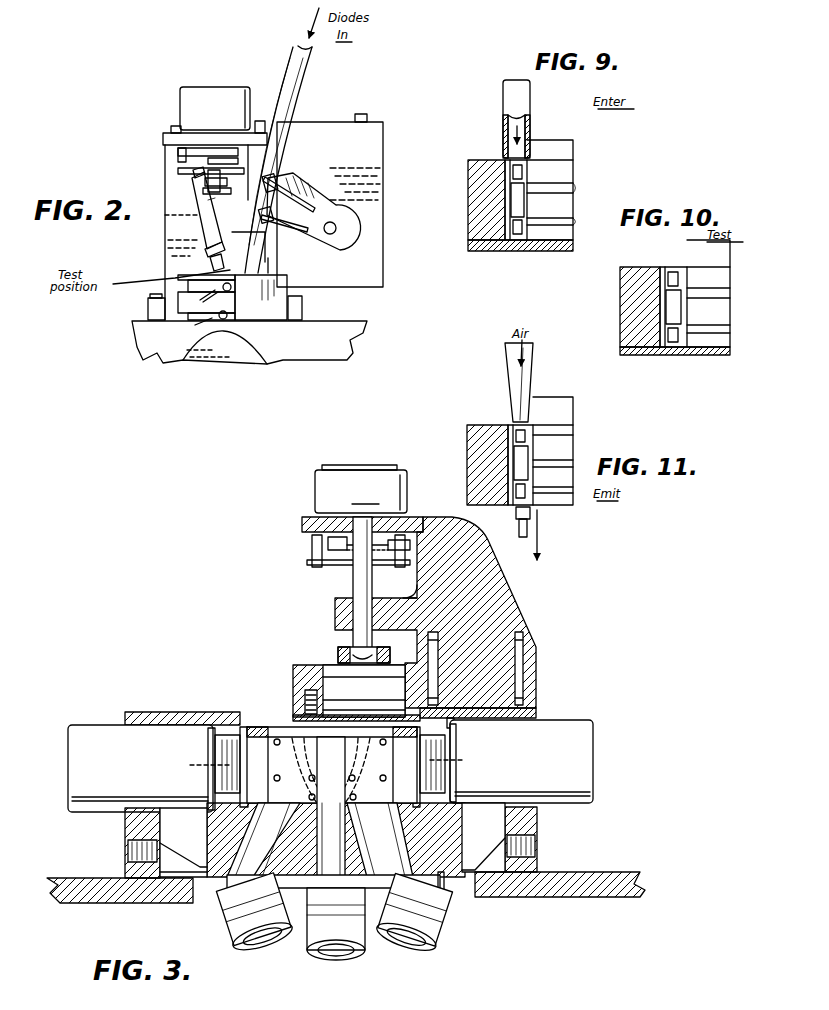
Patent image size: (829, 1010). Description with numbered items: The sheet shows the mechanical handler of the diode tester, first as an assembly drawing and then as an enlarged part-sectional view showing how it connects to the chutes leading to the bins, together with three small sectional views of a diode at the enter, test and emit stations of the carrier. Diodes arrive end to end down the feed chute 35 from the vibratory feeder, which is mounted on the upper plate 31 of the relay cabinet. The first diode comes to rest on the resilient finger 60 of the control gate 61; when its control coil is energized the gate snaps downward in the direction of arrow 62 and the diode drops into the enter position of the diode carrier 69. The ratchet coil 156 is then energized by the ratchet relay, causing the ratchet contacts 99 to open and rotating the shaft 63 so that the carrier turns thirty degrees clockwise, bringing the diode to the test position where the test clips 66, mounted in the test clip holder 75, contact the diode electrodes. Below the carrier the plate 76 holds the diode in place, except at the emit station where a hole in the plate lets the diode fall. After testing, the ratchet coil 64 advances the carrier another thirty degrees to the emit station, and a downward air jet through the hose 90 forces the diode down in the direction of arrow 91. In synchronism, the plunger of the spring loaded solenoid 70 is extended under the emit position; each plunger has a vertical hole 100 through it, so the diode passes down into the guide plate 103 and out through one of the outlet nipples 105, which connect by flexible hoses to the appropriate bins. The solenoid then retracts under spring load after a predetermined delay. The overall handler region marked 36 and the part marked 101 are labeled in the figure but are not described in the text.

In FIG. 3, the upper plate 31 is at (58, 898).
In FIG. 2, the feed chute 35 is at (306, 70).
In FIG. 9, the feed chute 35 is at (527, 100).
In FIG. 2, the test station 36 is at (147, 155).
In FIG. 9, the test station 36 is at (487, 147).
In FIG. 10, the test station 36 is at (614, 306).
In FIG. 11, the test station 36 is at (493, 416).
In FIG. 3, the test station 36 is at (260, 557).
In FIG. 2, the resilient finger 60 is at (312, 190).
In FIG. 2, the control gate 61 is at (322, 211).
In FIG. 2, the arrow 62 is at (298, 240).
In FIG. 2, the shaft 63 is at (212, 190).
In FIG. 3, the shaft 63 is at (360, 640).
In FIG. 3, the ratchet coil 64 is at (381, 468).
In FIG. 2, the test clips 66 is at (220, 300).
In FIG. 9, the test clips 66 is at (503, 179).
In FIG. 10, the test clips 66 is at (657, 274).
In FIG. 11, the test clips 66 is at (520, 465).
In FIG. 2, the diode carrier 69 is at (173, 316).
In FIG. 9, the diode carrier 69 is at (584, 192).
In FIG. 10, the diode carrier 69 is at (740, 283).
In FIG. 11, the diode carrier 69 is at (582, 454).
In FIG. 2, the spring loaded solenoid 70 is at (235, 363).
In FIG. 3, the spring loaded solenoid 70 is at (101, 727).
In FIG. 9, the test clip holder 75 is at (478, 224).
In FIG. 10, the test clip holder 75 is at (655, 273).
In FIG. 11, the test clip holder 75 is at (480, 467).
In FIG. 3, the test clip holder 75 is at (309, 667).
In FIG. 9, the plate 76 is at (487, 249).
In FIG. 10, the plate 76 is at (622, 349).
In FIG. 3, the plate 76 is at (303, 716).
In FIG. 2, the air jet hose 90 is at (195, 180).
In FIG. 11, the air jet hose 90 is at (531, 382).
In FIG. 11, the arrow 91 is at (539, 519).
In FIG. 2, the ratchet contacts 99 is at (180, 152).
In FIG. 3, the ratchet contacts 99 is at (323, 540).
In FIG. 3, the vertical hole 100 is at (280, 806).
In FIG. 3, the mounting plate 101 is at (293, 723).
In FIG. 3, the guide plate 103 is at (442, 890).
In FIG. 3, the outlet nipples 105 is at (330, 958).
In FIG. 2, the ratchet coil 156 is at (222, 88).
In FIG. 3, the ratchet coil 156 is at (365, 495).